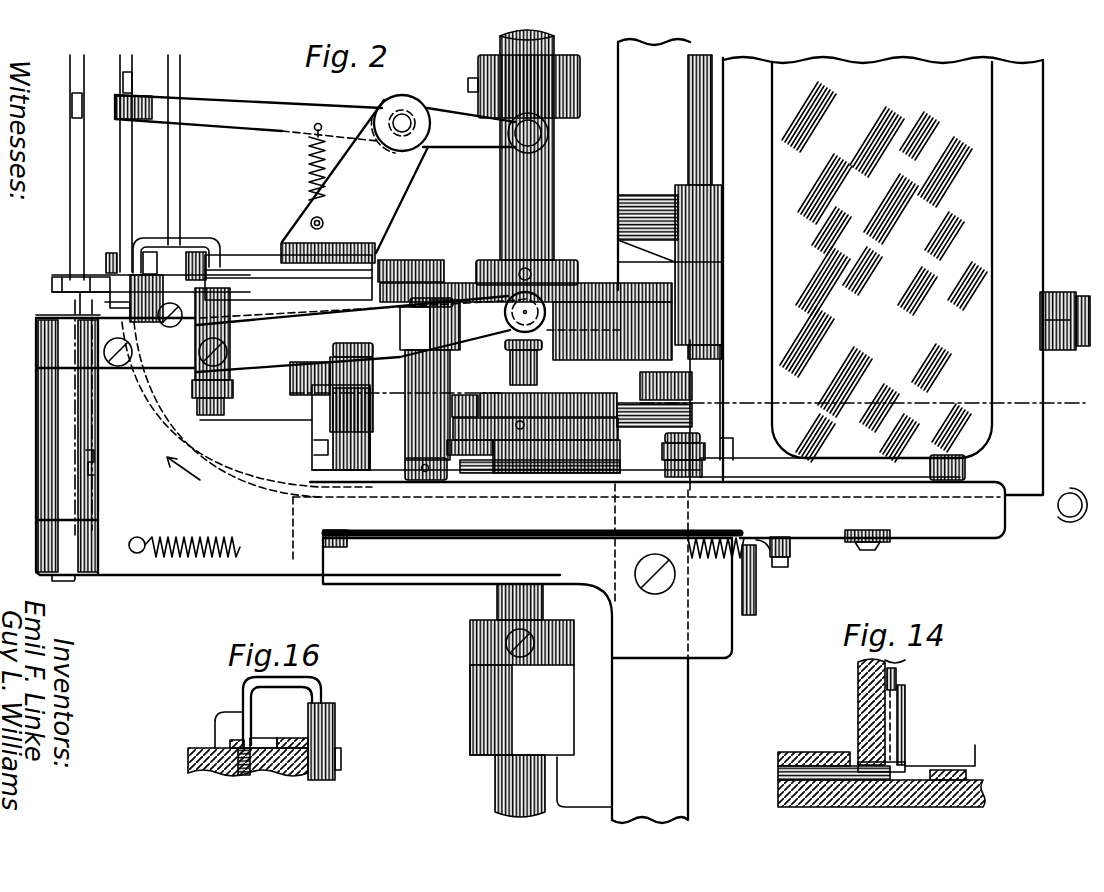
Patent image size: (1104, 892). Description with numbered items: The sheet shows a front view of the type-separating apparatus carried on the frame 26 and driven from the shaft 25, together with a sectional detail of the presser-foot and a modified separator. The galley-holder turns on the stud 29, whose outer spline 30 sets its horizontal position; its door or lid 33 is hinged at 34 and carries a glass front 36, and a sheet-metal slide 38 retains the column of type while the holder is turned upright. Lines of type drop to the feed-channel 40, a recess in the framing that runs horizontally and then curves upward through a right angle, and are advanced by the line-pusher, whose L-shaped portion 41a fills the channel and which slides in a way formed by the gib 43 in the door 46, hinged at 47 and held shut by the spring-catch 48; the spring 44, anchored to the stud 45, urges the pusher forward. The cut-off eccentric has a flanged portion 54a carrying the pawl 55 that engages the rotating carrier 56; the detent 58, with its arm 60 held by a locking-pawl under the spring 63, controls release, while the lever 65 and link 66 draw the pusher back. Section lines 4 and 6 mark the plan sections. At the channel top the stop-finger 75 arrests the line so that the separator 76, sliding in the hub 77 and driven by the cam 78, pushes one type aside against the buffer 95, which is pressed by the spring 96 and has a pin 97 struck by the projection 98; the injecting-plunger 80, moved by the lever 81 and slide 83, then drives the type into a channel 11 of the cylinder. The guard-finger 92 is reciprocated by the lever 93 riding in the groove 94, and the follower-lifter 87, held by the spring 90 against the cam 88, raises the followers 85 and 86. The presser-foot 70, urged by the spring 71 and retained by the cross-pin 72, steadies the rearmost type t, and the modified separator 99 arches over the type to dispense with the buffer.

In FIG. 2, the channels of the distributing-cylinder 11 is at (125, 59).
In FIG. 2, the follower 85 is at (80, 101).
In FIG. 2, the follower 86 is at (130, 86).
In FIG. 2, the follower-lifter 87 is at (248, 118).
In FIG. 2, the spring 90 is at (308, 170).
In FIG. 2, the frame 26 is at (485, 459).
In FIG. 2, the cam 88 is at (566, 110).
In FIG. 2, the shaft 25 is at (518, 206).
In FIG. 2, the hinge 34 is at (700, 128).
In FIG. 2, the glass front 36 is at (883, 259).
In FIG. 2, the door or lid 33 is at (1023, 278).
In FIG. 2, the spline 30 is at (1060, 300).
In FIG. 2, the stud 29 is at (1060, 326).
In FIG. 2, the section line 6 is at (870, 405).
In FIG. 2, the groove in the periphery of the cam 94 is at (668, 308).
In FIG. 2, the cam 78 is at (593, 290).
In FIG. 2, the projection of the separator 98 is at (150, 252).
In FIG. 2, the separator 76 is at (196, 252).
In FIG. 2, the guard-finger 92 is at (209, 246).
In FIG. 16, the guard-finger 92 is at (316, 693).
In FIG. 2, the pin 97 is at (108, 254).
In FIG. 2, the injecting-plunger 80 is at (127, 283).
In FIG. 2, the buffer 95 is at (52, 283).
In FIG. 2, the spring 96 is at (50, 302).
In FIG. 2, the hub 77 is at (290, 271).
In FIG. 2, the lever 81 is at (325, 315).
In FIG. 2, the lever 93 is at (368, 354).
In FIG. 2, the section line 4 is at (384, 387).
In FIG. 2, the slide 83 is at (537, 378).
In FIG. 2, the detent 58 is at (430, 389).
In FIG. 2, the pawl 55 is at (465, 406).
In FIG. 2, the carrier 56 is at (548, 405).
In FIG. 2, the arm 60 is at (503, 455).
In FIG. 2, the lever 65 is at (643, 447).
In FIG. 2, the link 66 is at (828, 470).
In FIG. 2, the gib 43 is at (990, 489).
In FIG. 2, the flanged portion of the eccentric 54a is at (538, 482).
In FIG. 2, the slide 38 is at (1073, 493).
In FIG. 2, the door 46 is at (384, 558).
In FIG. 2, the feed-channel 40 is at (240, 485).
In FIG. 16, the feed-channel 40 is at (246, 776).
In FIG. 2, the spring 63 is at (330, 470).
In FIG. 2, the spring 44 is at (197, 560).
In FIG. 2, the hinge 47 is at (64, 580).
In FIG. 2, the stud 45 is at (790, 552).
In FIG. 2, the spring-catch 48 is at (880, 550).
In FIG. 16, the separator 99 is at (222, 722).
In FIG. 16, the stop-finger 75 is at (265, 740).
In FIG. 16, the type t is at (240, 742).
In FIG. 14, the L-shaped portion of the pusher 41a is at (965, 774).
In FIG. 14, the presser-foot 70 is at (892, 773).
In FIG. 14, the cross-pin 72 is at (897, 680).
In FIG. 14, the spring 71 is at (905, 715).